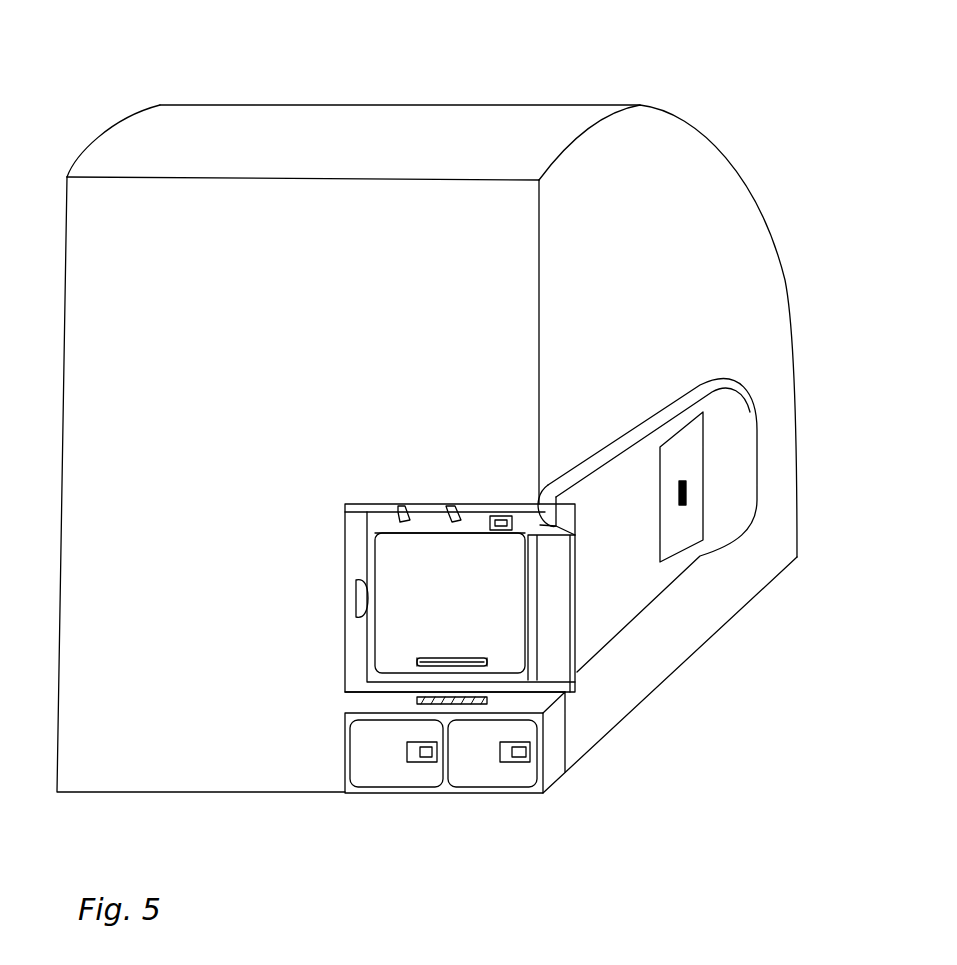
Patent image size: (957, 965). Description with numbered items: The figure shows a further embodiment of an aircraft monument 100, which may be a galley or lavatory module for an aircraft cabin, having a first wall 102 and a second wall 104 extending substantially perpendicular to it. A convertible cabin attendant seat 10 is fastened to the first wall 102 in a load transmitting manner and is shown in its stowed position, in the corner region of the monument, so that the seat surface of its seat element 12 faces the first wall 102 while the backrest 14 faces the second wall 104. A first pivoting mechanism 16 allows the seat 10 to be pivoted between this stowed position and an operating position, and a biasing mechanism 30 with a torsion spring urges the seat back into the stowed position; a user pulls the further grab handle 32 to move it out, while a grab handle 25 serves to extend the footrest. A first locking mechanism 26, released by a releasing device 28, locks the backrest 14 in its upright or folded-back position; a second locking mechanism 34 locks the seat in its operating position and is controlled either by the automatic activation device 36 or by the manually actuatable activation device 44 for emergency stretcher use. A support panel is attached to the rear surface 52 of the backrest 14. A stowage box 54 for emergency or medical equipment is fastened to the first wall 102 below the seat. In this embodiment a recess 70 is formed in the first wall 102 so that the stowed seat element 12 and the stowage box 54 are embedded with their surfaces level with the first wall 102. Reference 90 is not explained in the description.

The aircraft monument 100 is at (607, 40).
The first wall 102 is at (258, 213).
The second wall 104 is at (670, 129).
The convertible cabin attendant seat 10 is at (447, 422).
The seat element 12 is at (478, 512).
The backrest 14 is at (672, 400).
The first pivoting mechanism 16 is at (395, 683).
The grab handle 25 is at (356, 600).
The first locking mechanism 26 is at (548, 492).
The releasing device 28 is at (500, 522).
The biasing mechanism 30 is at (490, 681).
The further grab handle 32 is at (408, 508).
The second locking mechanism 34 is at (440, 657).
The automatic activation device 36 is at (468, 658).
The manually actuatable activation device 44 is at (425, 657).
The rear surface 52 is at (733, 410).
The stowage box 54 is at (560, 757).
The recess 70 is at (378, 520).
The slot 90 is at (687, 540).